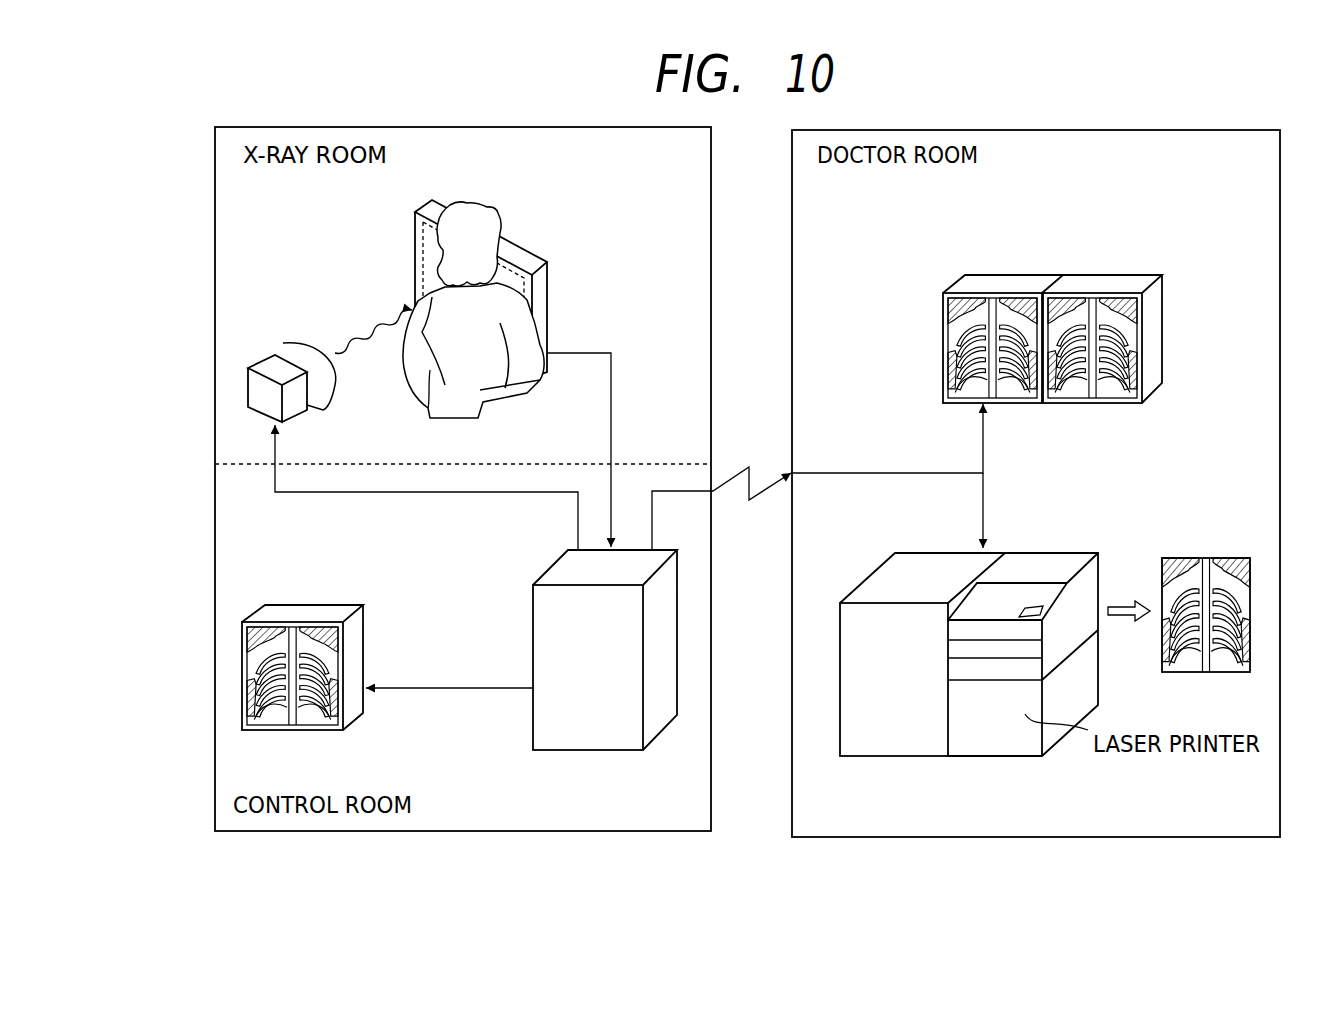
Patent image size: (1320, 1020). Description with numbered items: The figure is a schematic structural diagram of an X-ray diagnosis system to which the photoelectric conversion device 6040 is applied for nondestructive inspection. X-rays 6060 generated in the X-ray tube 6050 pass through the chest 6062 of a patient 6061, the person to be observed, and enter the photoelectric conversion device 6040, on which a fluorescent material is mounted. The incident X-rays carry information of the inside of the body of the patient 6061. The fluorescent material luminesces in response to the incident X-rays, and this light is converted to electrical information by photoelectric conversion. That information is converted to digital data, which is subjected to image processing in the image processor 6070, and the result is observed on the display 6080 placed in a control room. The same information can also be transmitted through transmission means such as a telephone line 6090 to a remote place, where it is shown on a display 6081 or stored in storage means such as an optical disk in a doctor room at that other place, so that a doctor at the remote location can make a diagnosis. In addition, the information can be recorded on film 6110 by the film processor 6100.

The photoelectric conversion device 6040 is at (533, 290).
The X-ray tube 6050 is at (270, 363).
The X-rays 6060 is at (368, 323).
The patient 6061 is at (487, 209).
The chest 6062 is at (463, 392).
The image processor 6070 is at (560, 740).
The display 6080 is at (303, 604).
The display 6081 is at (1010, 275).
The telephone line 6090 is at (749, 468).
The film processor 6100 is at (860, 742).
The film 6110 is at (1212, 558).